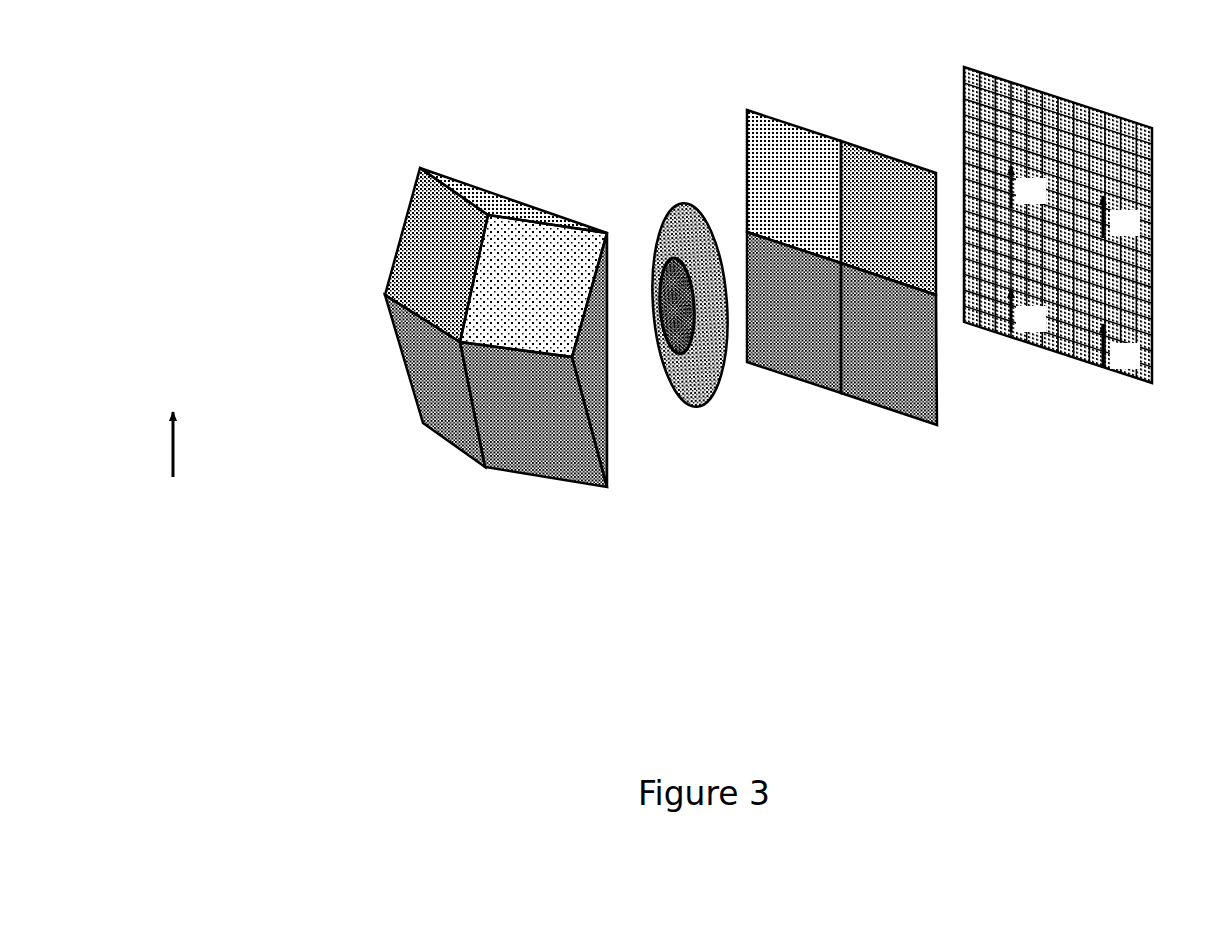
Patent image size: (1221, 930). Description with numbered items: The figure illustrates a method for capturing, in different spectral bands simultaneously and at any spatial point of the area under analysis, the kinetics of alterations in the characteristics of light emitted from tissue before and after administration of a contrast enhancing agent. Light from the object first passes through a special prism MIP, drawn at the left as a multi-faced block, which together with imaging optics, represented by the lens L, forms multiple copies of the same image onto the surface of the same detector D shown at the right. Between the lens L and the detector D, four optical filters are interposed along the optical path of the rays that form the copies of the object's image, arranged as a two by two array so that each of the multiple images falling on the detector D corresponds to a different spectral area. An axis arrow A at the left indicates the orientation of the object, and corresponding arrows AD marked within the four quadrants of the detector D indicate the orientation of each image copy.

The special prism MIP is at (487, 192).
The lens L is at (668, 210).
The detector D is at (1077, 269).
The detector axis AD is at (1075, 269).
The axis A is at (175, 470).